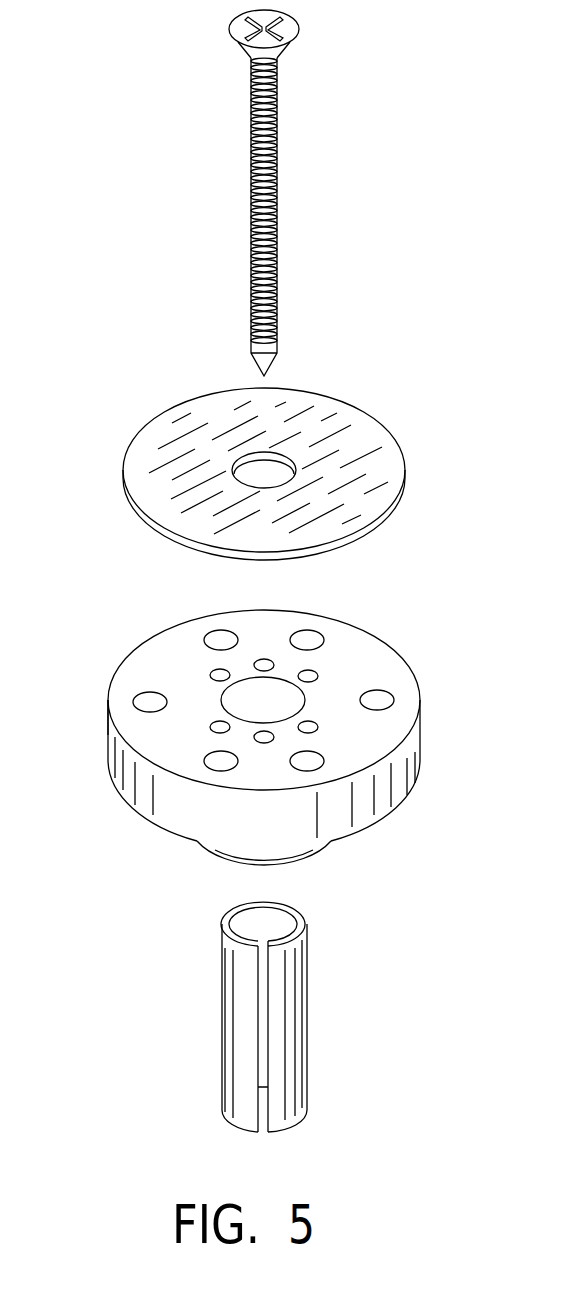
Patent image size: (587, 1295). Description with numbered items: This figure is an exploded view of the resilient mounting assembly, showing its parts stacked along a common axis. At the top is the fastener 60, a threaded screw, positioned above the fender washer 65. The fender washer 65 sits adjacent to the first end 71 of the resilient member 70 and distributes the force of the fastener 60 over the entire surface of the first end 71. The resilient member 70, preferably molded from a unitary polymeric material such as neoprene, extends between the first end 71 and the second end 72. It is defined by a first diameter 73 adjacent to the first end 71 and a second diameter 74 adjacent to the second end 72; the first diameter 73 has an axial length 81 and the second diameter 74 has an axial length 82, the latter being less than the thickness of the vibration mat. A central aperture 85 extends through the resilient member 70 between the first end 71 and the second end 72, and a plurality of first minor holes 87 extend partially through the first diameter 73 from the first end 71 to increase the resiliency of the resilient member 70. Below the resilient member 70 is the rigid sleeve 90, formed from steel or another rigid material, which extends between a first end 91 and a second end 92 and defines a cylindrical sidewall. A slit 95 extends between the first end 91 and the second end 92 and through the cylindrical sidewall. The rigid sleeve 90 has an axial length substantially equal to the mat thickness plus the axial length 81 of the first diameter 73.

The fastener 60 is at (278, 190).
The fender washer 65 is at (323, 432).
The resilient member 70 is at (241, 757).
The first end 71 is at (167, 630).
The second end 72 is at (290, 865).
The first diameter 73 is at (108, 752).
The second diameter 74 is at (317, 853).
The axial length 81 is at (383, 805).
The axial length 82 is at (212, 853).
The central aperture 85 is at (235, 697).
The first minor holes 87 is at (143, 702).
The rigid sleeve 90 is at (256, 1017).
The first end 91 is at (222, 933).
The second end 92 is at (223, 1120).
The slit 95 is at (263, 1032).